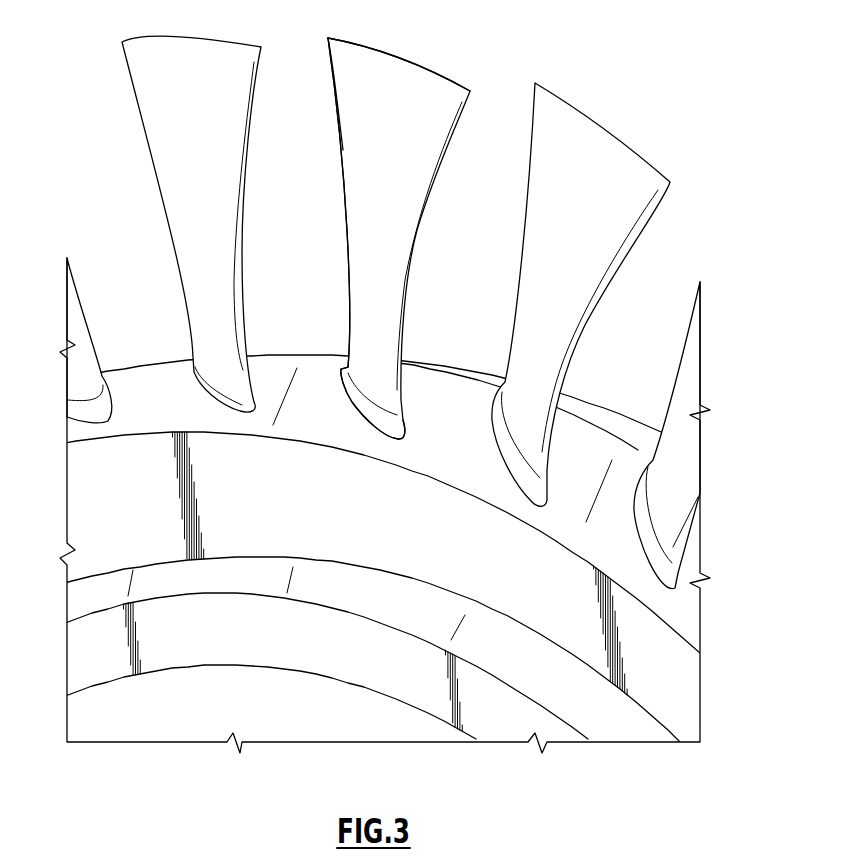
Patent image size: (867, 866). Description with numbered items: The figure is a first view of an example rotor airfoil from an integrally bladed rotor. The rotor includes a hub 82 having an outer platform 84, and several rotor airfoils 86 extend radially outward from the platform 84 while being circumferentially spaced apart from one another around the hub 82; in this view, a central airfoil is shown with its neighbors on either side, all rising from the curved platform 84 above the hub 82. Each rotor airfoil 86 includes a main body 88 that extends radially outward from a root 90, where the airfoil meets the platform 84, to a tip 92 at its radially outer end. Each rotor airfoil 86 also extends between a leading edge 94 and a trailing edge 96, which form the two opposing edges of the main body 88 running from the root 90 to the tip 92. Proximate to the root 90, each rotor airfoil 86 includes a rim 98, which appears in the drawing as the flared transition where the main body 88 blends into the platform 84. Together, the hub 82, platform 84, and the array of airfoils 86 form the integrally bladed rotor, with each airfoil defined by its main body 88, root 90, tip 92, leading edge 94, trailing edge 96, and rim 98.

The hub 82 is at (356, 665).
The outer platform 84 is at (286, 368).
The rotor airfoil 86 is at (327, 148).
The main body 88 is at (348, 98).
The root 90 is at (413, 422).
The tip 92 is at (418, 57).
The leading edge 94 is at (428, 222).
The trailing edge 96 is at (343, 197).
The rim 98 is at (361, 392).